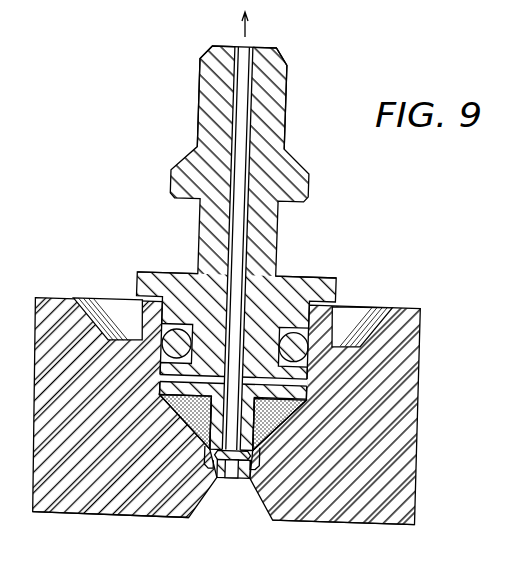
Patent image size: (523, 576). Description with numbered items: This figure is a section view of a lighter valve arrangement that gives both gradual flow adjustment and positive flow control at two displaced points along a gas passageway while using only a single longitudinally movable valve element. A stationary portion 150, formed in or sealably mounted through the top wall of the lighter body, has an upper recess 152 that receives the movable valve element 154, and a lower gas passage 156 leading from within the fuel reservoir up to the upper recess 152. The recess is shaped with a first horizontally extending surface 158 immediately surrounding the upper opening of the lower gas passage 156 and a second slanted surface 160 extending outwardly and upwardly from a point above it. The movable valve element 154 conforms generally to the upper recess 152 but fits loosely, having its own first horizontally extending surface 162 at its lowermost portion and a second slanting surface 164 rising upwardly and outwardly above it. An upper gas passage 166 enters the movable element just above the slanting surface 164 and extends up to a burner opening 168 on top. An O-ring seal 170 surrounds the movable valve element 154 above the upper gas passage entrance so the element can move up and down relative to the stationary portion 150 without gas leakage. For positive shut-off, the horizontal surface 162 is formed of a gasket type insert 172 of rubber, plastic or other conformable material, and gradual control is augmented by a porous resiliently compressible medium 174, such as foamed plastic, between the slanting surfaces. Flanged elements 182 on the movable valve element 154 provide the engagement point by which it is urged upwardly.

The stationary portion 150 is at (55, 299).
The upper recess 152 is at (152, 362).
The movable valve element 154 is at (202, 98).
The lower gas passage 156 is at (231, 480).
The first horizontally extending surface 158 is at (252, 481).
The second slanted surface 160 is at (305, 440).
The first horizontally extending surface 162 is at (160, 515).
The second slanting surface 164 is at (287, 403).
The upper gas passage 166 is at (224, 328).
The burner opening 168 is at (240, 47).
The O-ring seal 170 is at (328, 337).
The gasket type insert 172 is at (212, 463).
The porous resiliently compressible medium 174 is at (305, 413).
The flanged elements 182 is at (177, 272).